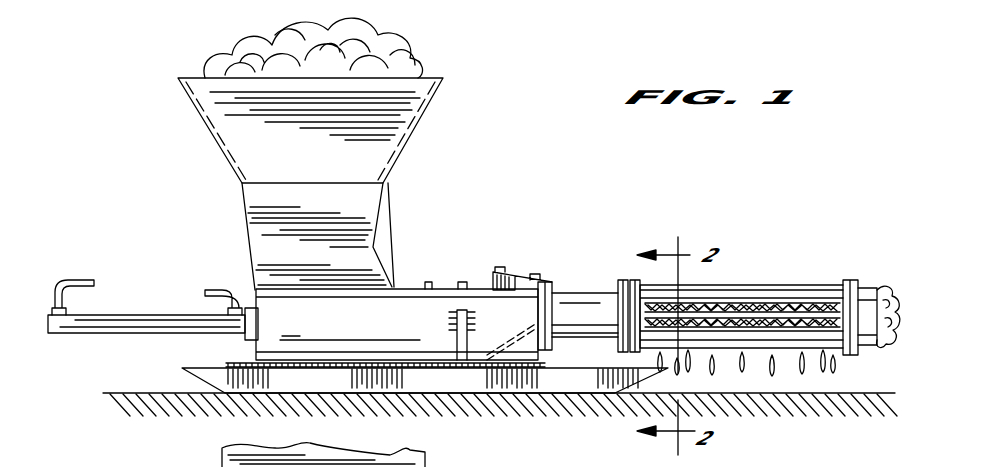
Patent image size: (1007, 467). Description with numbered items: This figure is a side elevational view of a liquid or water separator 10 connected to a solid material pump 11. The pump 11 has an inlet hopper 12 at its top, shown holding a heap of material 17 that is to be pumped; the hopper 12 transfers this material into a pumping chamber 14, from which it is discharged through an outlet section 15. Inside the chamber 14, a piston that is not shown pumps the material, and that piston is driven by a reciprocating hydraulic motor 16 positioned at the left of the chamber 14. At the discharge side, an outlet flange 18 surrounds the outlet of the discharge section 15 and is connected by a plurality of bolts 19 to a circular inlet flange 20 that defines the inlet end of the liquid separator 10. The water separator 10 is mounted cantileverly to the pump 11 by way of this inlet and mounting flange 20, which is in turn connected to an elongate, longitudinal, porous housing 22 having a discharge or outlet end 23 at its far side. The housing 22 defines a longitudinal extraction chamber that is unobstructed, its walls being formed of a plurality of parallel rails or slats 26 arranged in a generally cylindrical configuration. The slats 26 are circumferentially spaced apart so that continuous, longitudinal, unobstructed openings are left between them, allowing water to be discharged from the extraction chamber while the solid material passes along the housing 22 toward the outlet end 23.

The liquid separator 10 is at (798, 266).
The solid material pump 11 is at (418, 162).
The inlet hopper 12 is at (416, 122).
The pumping chamber 14 is at (395, 311).
The outlet section 15 is at (598, 330).
The reciprocating hydraulic motor 16 is at (127, 317).
The waste material 17 is at (385, 32).
The outlet flange 18 is at (622, 285).
The bolts 19 is at (620, 288).
The inlet flange 20 is at (640, 290).
The porous housing 22 is at (825, 285).
The outlet end 23 is at (853, 345).
The slats 26 is at (795, 330).